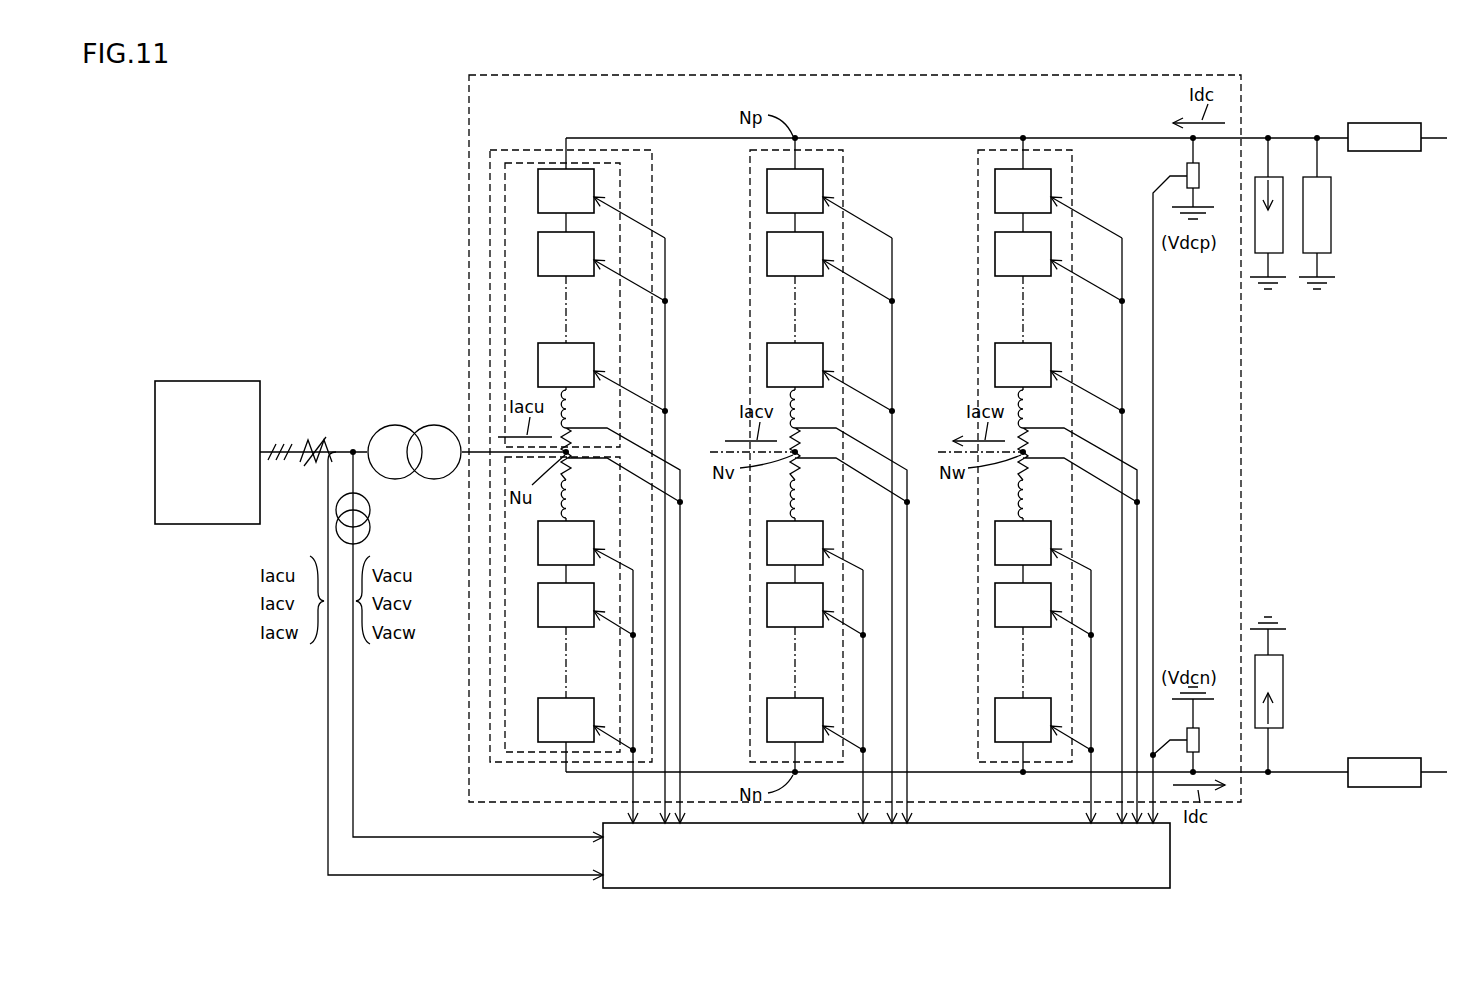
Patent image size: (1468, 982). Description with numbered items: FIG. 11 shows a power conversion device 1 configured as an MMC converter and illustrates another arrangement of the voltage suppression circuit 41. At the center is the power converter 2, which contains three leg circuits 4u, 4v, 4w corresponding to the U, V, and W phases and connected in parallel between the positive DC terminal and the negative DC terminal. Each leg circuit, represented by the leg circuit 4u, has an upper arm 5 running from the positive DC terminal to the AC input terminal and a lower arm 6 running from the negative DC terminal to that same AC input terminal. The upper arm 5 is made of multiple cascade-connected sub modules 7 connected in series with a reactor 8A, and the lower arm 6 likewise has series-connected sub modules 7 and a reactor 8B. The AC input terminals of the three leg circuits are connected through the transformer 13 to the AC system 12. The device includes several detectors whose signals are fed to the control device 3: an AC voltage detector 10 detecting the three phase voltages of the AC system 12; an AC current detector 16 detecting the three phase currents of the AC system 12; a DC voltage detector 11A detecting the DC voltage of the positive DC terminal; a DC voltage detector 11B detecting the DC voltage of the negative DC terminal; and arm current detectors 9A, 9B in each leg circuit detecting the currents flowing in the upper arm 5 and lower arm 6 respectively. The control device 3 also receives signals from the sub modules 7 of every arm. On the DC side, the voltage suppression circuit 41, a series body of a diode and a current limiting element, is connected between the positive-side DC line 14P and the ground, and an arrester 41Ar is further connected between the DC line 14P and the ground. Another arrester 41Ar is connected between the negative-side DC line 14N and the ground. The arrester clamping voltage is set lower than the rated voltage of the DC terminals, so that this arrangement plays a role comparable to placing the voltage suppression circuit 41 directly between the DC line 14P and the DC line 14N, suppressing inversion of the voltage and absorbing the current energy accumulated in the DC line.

The power conversion device 1 is at (420, 166).
The power converter 2 is at (469, 121).
The control device 3 is at (1170, 858).
The leg circuit 4u is at (509, 150).
The leg circuit 4v is at (826, 150).
The leg circuit 4w is at (1056, 150).
The upper arm 5 is at (505, 299).
The lower arm 6 is at (505, 662).
The sub module 7 is at (538, 191).
The reactor 8A is at (572, 409).
The reactor 8B is at (572, 503).
The arm current detector 9A is at (572, 441).
The arm current detector 9B is at (572, 470).
The AC voltage detector 10 is at (372, 512).
The DC voltage detector 11A is at (1199, 180).
The DC voltage detector 11B is at (1199, 742).
The AC system 12 is at (208, 381).
The transformer 13 is at (390, 425).
The DC line 14P is at (1395, 152).
The DC line 14N is at (1385, 758).
The AC current detector 16 is at (309, 440).
The voltage suppression circuit 41 is at (1331, 195).
The arrester 41Ar is at (1283, 247).